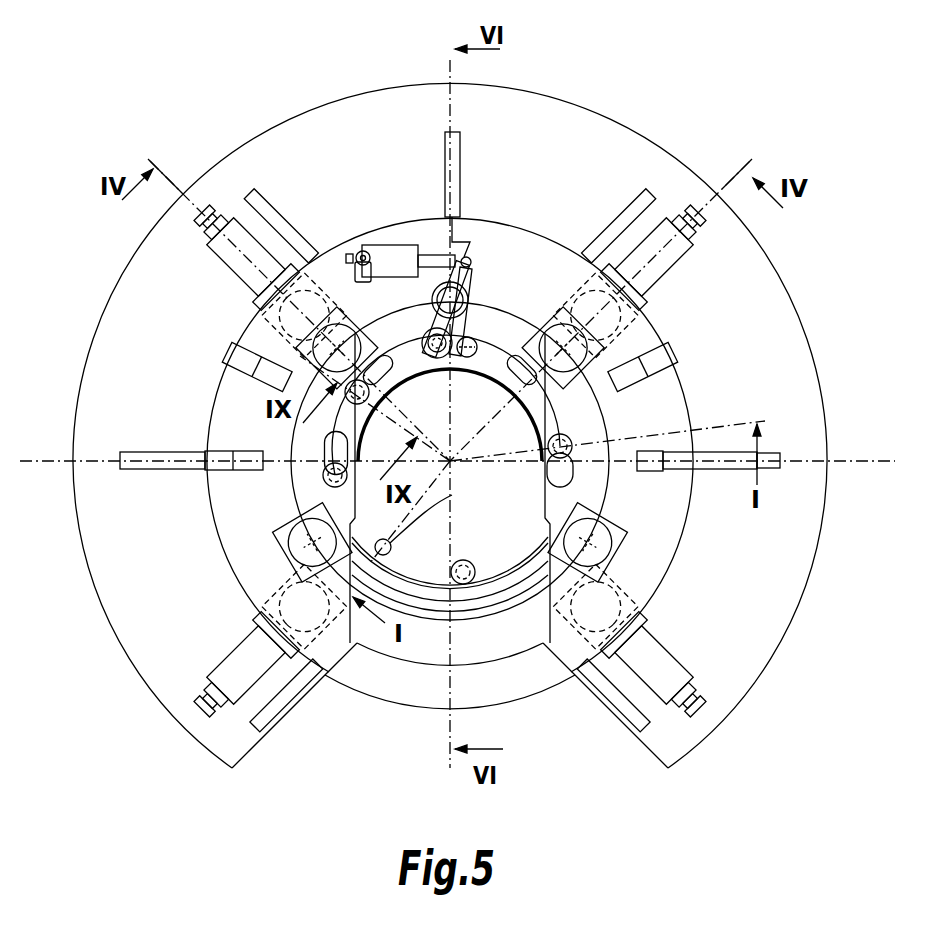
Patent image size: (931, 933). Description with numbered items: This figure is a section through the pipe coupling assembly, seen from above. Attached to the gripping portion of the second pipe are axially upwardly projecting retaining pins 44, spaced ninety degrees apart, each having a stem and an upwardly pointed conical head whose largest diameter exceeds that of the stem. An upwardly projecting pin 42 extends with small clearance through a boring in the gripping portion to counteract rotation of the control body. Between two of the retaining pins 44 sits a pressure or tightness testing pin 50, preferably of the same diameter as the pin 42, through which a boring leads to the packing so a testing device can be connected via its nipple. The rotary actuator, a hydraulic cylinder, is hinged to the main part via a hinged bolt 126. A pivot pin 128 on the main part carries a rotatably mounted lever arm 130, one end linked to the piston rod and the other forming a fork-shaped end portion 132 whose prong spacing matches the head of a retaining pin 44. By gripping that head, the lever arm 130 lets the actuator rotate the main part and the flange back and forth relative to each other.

The pin 42 is at (392, 545).
The retaining pins 44 is at (437, 357).
The tightness testing pin 50 is at (484, 433).
The hinged bolt 126 is at (362, 251).
The pivot pin 128 is at (477, 287).
The lever arm 130 is at (430, 316).
The fork-shaped end portion 132 is at (422, 333).